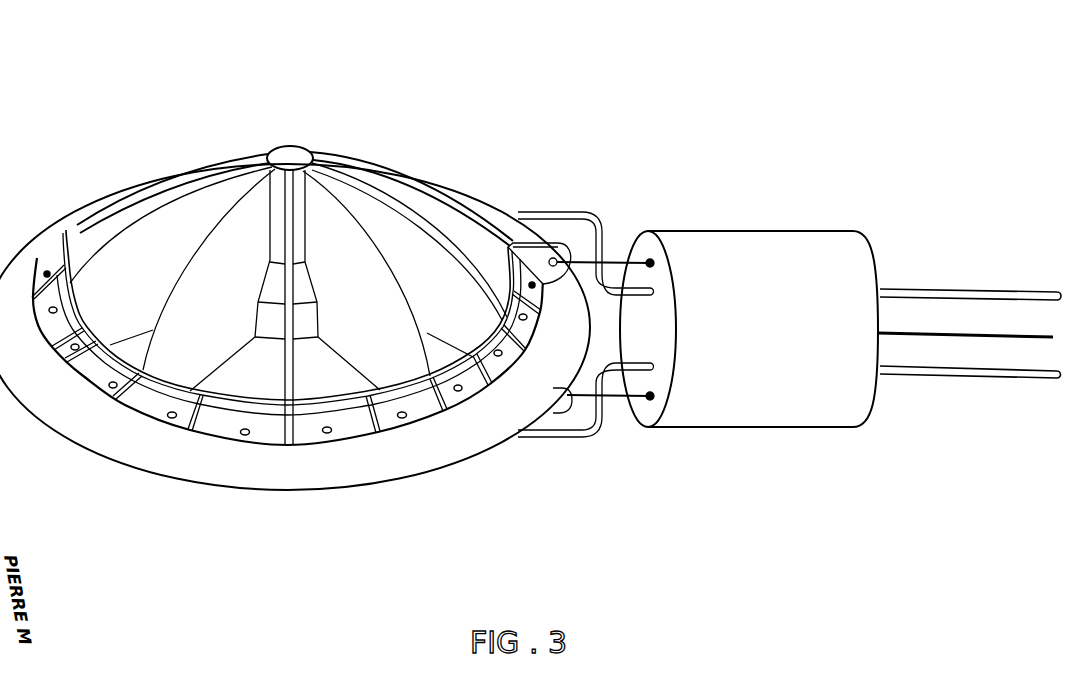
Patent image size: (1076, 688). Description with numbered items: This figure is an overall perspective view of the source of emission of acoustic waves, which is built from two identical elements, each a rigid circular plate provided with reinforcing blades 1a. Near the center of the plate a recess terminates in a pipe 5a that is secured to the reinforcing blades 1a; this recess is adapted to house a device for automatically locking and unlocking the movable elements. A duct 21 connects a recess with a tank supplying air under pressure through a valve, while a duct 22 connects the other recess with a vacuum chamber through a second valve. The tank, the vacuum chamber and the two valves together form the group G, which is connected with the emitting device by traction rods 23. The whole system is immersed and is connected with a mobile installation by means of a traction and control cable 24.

The reinforcing blades 1a is at (235, 220).
The pipe 5a is at (298, 327).
The duct 21 is at (572, 433).
The duct 22 is at (553, 218).
The traction rods 23 is at (617, 245).
The traction and control cable 24 is at (963, 337).
The group G is at (777, 393).